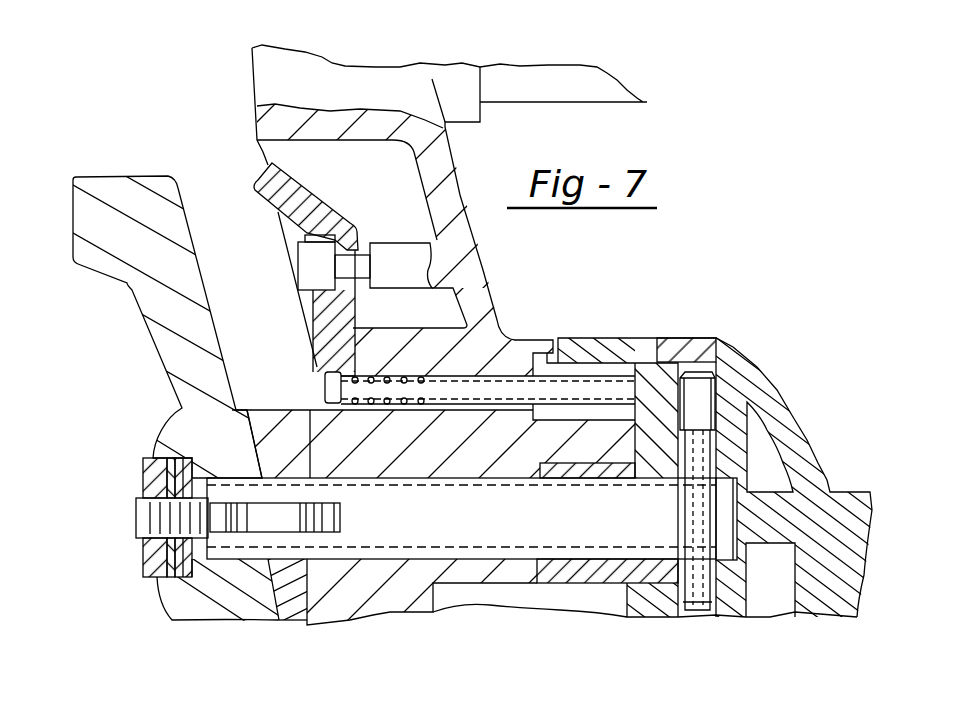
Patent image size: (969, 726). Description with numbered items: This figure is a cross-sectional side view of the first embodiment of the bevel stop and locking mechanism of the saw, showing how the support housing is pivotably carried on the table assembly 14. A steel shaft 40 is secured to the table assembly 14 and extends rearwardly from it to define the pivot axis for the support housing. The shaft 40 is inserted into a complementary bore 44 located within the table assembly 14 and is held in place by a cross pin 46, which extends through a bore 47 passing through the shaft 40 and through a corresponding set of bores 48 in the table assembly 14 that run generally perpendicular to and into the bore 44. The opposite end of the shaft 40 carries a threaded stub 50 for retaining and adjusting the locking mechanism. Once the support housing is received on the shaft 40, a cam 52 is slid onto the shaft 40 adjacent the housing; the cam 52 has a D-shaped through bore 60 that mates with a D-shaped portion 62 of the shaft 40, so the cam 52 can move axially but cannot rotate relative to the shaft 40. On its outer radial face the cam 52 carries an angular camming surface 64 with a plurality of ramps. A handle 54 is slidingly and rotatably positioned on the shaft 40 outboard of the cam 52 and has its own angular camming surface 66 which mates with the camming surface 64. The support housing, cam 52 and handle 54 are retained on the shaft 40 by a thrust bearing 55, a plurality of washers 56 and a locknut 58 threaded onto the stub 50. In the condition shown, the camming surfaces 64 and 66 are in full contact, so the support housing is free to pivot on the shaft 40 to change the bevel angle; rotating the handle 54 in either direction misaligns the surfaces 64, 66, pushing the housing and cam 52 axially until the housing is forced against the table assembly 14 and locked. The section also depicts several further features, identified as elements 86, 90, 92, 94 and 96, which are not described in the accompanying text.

The table assembly 14 is at (783, 421).
The shaft 40 is at (530, 527).
The bore 44 is at (597, 483).
The cross pin 46 is at (700, 461).
The bore 47 is at (693, 518).
The set of bores 48 is at (710, 400).
The threaded stub 50 is at (143, 512).
The cam 52 is at (293, 417).
The handle 54 is at (118, 187).
The thrust bearing 55 is at (162, 586).
The washers 56 is at (167, 545).
The locknut 58 is at (152, 458).
The D-shaped through bore 60 is at (283, 480).
The D-shaped portion 62 is at (300, 524).
The angular camming surface 64 is at (238, 450).
The angular camming surface 66 is at (304, 422).
The pad 86 is at (283, 185).
The plunger rod 90 is at (507, 380).
The spring 92 is at (385, 376).
The plunger head 94 is at (320, 371).
The spring seat 96 is at (410, 247).